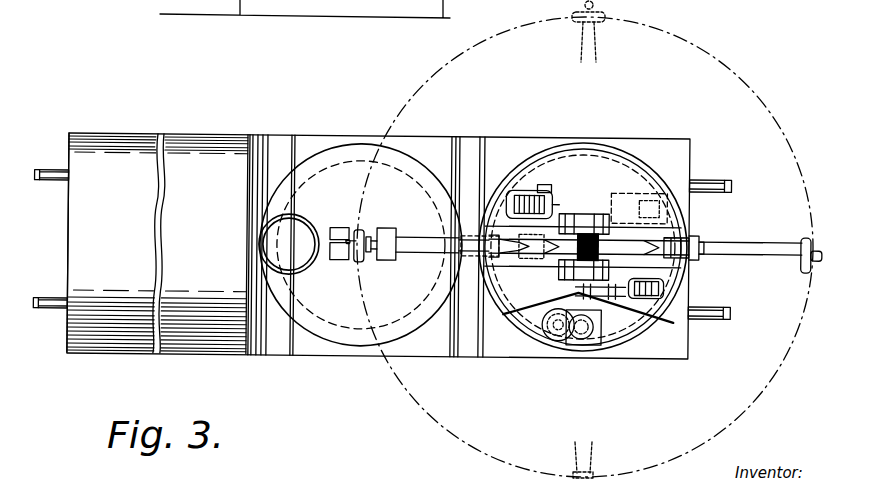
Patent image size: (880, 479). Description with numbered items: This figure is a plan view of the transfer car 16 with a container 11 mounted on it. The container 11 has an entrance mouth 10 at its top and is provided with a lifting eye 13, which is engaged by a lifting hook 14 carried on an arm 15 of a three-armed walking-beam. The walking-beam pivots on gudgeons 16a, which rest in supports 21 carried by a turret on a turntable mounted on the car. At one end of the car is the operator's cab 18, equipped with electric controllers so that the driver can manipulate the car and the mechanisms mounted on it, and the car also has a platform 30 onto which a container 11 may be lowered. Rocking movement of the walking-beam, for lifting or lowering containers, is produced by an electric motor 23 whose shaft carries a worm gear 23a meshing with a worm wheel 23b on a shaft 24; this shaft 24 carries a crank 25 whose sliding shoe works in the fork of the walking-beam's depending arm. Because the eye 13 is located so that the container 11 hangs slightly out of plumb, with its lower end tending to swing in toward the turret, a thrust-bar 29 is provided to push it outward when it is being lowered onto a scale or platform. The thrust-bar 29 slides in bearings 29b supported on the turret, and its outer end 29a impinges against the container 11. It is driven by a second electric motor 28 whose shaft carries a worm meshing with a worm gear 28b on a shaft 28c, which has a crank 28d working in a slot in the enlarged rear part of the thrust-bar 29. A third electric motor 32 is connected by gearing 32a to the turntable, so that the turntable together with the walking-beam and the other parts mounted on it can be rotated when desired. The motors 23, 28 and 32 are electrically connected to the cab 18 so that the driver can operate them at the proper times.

The entrance mouth 10 is at (293, 221).
The container 11 is at (347, 142).
The eye 13 is at (340, 254).
The lifting hook 14 is at (357, 259).
The arm 15 is at (412, 229).
The transfer car 16 is at (272, 140).
The gudgeons 16a is at (505, 336).
The operator's cab 18 is at (187, 141).
The supports 21 is at (690, 209).
The electric motor 23 is at (632, 195).
The worm gear 23a is at (548, 185).
The worm wheel 23b is at (510, 184).
The shaft 24 is at (550, 205).
The crank 25 is at (548, 236).
The electric motor 28 is at (635, 345).
The worm gear 28b is at (690, 284).
The shaft 28c is at (673, 317).
The crank 28d is at (690, 226).
The thrust-bar 29 is at (453, 136).
The outer end 29a is at (460, 263).
The bearings 29b is at (460, 306).
The platform 30 is at (312, 345).
The electric motor 32 is at (593, 355).
The gearing 32a is at (558, 355).